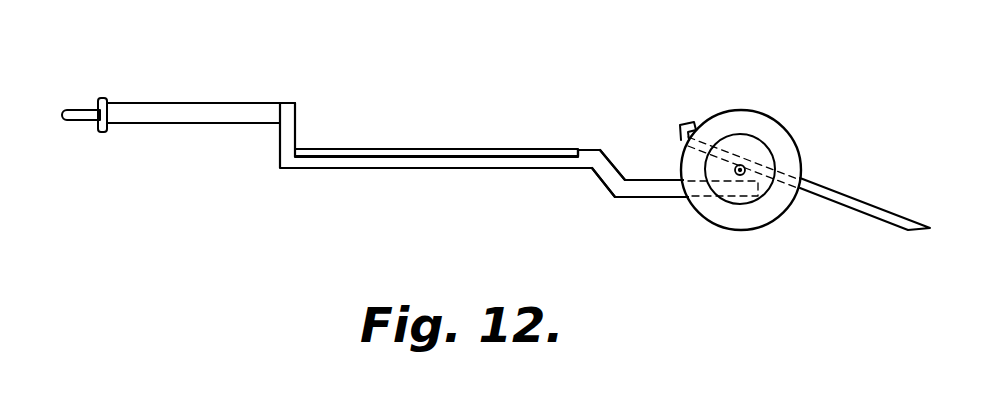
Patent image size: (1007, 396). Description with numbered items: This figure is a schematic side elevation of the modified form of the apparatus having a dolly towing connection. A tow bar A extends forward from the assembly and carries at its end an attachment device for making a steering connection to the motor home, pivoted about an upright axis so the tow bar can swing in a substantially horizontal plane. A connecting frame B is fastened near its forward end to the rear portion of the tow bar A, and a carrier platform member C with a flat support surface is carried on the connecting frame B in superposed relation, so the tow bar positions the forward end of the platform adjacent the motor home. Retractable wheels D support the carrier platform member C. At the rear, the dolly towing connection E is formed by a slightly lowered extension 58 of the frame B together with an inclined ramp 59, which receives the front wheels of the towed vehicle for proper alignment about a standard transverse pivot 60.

The tow bar A is at (167, 112).
The connecting frame B is at (345, 168).
The carrier platform member C is at (424, 148).
The retractable wheels D is at (768, 229).
The dolly towing connection E is at (692, 118).
The lowered extension of the frame 58 is at (646, 193).
The inclined ramp 59 is at (833, 191).
The transverse pivot 60 is at (746, 162).